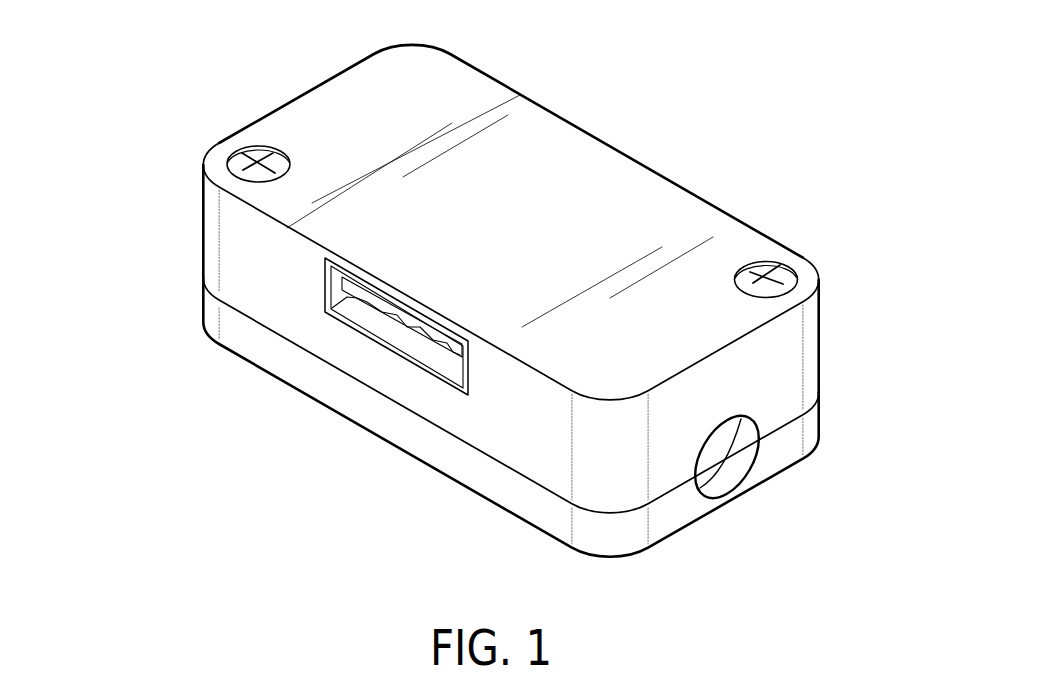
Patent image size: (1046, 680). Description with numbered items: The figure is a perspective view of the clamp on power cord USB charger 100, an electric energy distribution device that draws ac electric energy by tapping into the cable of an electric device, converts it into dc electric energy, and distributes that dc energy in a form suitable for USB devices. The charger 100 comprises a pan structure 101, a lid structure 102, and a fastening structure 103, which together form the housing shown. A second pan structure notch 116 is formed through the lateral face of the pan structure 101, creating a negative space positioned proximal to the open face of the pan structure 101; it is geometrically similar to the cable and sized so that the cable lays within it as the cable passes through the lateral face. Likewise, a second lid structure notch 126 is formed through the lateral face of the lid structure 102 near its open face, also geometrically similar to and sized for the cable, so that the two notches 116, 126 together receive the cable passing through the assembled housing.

The clamp on power cord USB charger 100 is at (128, 101).
The pan structure 101 is at (597, 162).
The lid structure 102 is at (615, 540).
The fastening structure 103 is at (249, 147).
The second pan structure notch 116 is at (748, 472).
The second lid structure notch 126 is at (747, 420).